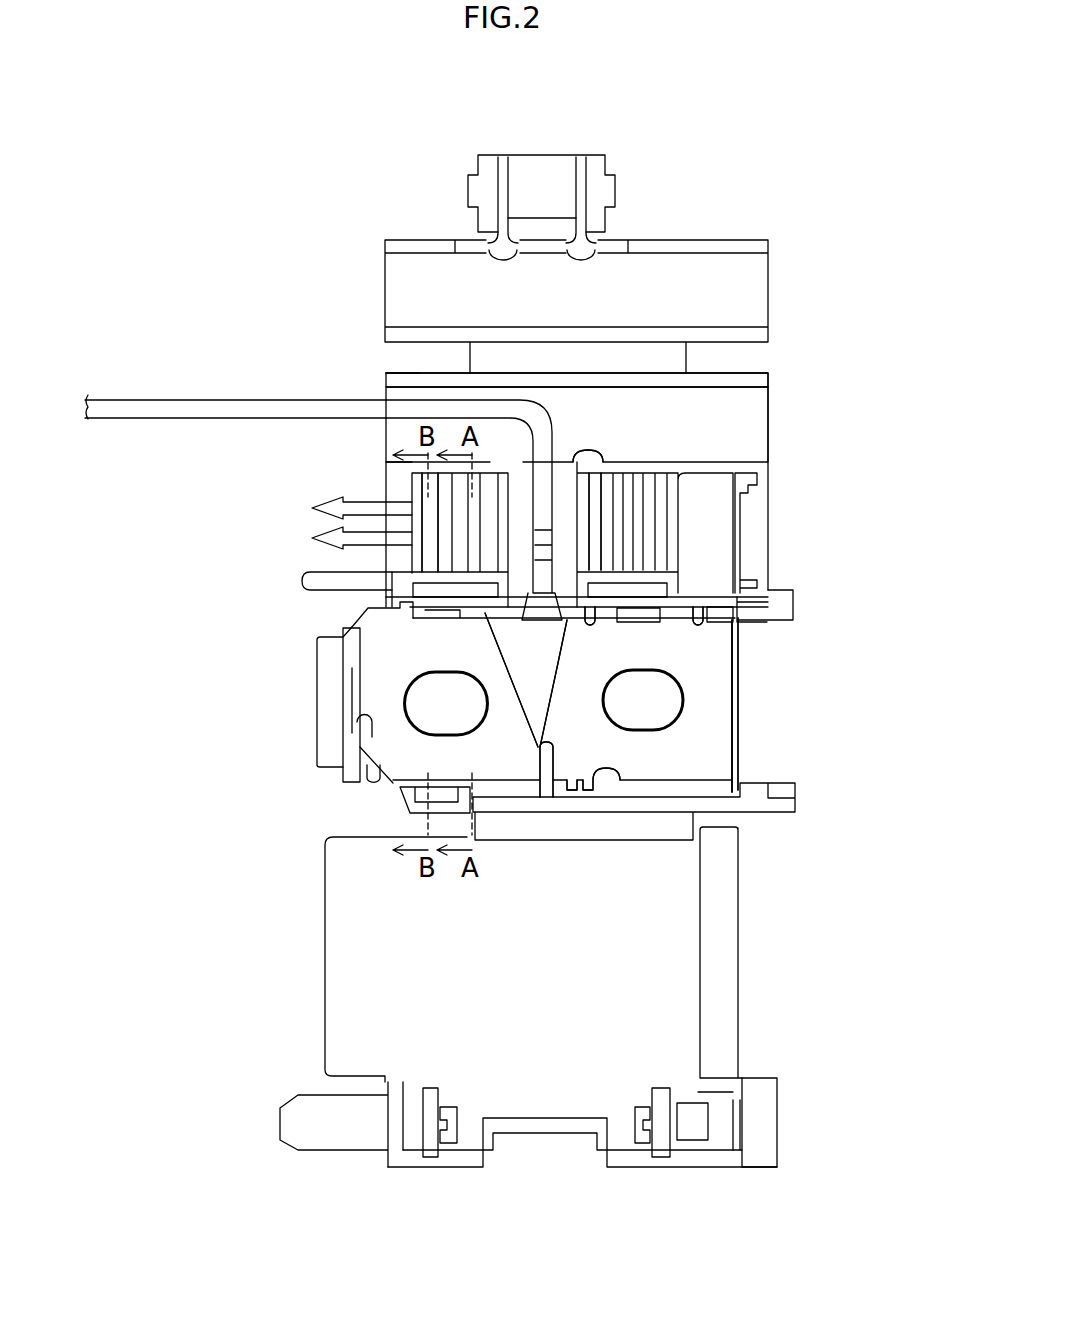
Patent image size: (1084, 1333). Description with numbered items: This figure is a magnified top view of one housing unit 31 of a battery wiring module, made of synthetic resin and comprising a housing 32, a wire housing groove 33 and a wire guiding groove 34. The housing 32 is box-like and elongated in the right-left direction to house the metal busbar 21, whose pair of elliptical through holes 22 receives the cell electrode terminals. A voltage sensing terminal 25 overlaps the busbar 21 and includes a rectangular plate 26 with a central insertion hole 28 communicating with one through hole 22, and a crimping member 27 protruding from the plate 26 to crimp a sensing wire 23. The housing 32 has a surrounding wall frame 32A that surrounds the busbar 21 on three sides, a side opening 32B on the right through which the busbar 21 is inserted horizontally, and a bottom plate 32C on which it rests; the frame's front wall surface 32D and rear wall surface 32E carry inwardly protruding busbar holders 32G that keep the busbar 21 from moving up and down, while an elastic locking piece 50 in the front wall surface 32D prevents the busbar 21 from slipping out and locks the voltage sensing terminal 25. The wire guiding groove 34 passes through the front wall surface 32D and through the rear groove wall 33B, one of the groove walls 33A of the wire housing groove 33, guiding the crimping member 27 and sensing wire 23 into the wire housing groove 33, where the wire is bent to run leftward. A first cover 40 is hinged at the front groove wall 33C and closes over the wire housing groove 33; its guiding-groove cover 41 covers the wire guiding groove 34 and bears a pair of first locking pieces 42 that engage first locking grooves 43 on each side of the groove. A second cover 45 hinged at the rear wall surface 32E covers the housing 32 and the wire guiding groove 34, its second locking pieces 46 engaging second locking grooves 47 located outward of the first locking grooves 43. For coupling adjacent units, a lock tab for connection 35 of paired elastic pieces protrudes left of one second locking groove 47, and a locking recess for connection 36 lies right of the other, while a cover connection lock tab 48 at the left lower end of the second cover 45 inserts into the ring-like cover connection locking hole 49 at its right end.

The busbar 21 is at (717, 657).
The through hole 22 is at (693, 707).
The sensing wire 23 is at (223, 400).
The voltage sensing terminal 25 is at (190, 555).
The plate 26 is at (390, 690).
The crimping member 27 is at (400, 560).
The insertion hole 28 is at (413, 707).
The housing unit 31 is at (822, 597).
The housing 32 is at (772, 758).
The surrounding wall frame 32A is at (355, 732).
The side opening 32B is at (780, 777).
The bottom plate 32C is at (742, 740).
The front wall surface 32D is at (730, 633).
The rear wall surface 32E is at (494, 634).
The busbar holder 32G is at (395, 786).
The wire housing groove 33 is at (760, 395).
The groove walls 33A is at (720, 460).
The rear groove wall 33B is at (390, 450).
The front groove wall 33C is at (386, 378).
The wire guiding groove 34 is at (380, 420).
The lock tab for connection 35 is at (312, 500).
The locking recess for connection 36 is at (740, 525).
The first cover 40 is at (405, 270).
The guiding-groove cover 41 is at (542, 185).
The first locking pieces 42 is at (603, 187).
The first locking groove 43 is at (600, 500).
The second cover 45 is at (353, 935).
The second locking pieces 46 is at (645, 1125).
The second locking groove 47 is at (435, 492).
The cover connection lock tab 48 is at (293, 1128).
The cover connection locking hole 49 is at (742, 1115).
The elastic locking piece 50 is at (577, 790).